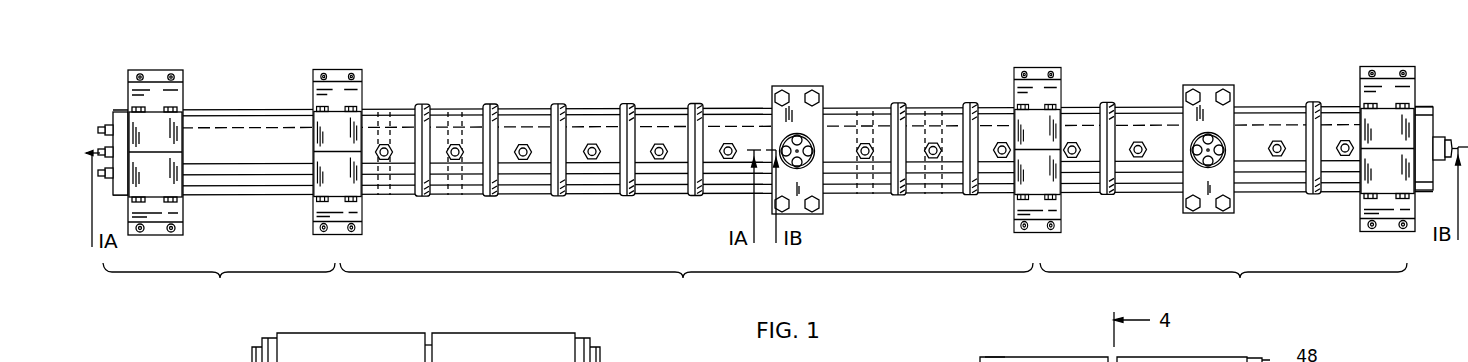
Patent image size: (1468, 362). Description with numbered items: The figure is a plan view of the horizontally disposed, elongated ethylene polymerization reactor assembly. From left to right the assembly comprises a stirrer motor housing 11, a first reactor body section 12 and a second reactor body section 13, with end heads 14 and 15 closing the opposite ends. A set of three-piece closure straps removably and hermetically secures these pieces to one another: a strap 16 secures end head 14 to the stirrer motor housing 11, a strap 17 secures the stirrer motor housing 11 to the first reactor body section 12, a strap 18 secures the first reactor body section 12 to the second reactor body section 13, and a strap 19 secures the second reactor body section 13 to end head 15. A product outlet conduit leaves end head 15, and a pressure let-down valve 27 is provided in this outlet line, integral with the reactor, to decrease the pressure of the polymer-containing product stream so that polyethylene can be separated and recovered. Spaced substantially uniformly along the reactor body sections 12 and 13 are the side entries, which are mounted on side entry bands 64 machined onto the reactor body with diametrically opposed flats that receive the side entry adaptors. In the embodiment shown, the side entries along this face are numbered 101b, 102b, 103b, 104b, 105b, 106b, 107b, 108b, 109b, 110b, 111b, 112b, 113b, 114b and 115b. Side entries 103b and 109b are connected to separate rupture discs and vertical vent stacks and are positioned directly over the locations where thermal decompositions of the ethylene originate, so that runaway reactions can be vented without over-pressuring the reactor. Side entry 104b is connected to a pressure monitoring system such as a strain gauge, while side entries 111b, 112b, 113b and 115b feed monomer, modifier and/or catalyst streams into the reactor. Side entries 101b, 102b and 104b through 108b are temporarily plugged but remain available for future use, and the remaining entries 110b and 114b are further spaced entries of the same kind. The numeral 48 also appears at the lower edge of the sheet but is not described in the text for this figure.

The stirrer motor housing 11 is at (212, 304).
The first reactor body section 12 is at (674, 304).
The second reactor body section 13 is at (1228, 301).
The end head 14 is at (113, 113).
The end head 15 is at (1425, 108).
The strap 16 is at (171, 66).
The strap 17 is at (339, 66).
The strap 18 is at (1063, 71).
The strap 19 is at (1419, 74).
The pressure let-down valve 27 is at (1440, 137).
The end clamp 48 is at (944, 361).
The side entry bands 64 is at (385, 198).
The side entry 101b is at (1346, 139).
The side entry 102b is at (1280, 139).
The side entry 103b is at (1229, 86).
The side entry 104b is at (1140, 141).
The side entry 105b is at (1073, 141).
The side entry 106b is at (999, 142).
The side entry 107b is at (936, 143).
The side entry 108b is at (868, 143).
The side entry 109b is at (810, 87).
The side entry 110b is at (731, 143).
The side entry 111b is at (662, 143).
The side entry 112b is at (595, 143).
The side entry 113b is at (527, 143).
The side entry 114b is at (458, 143).
The side entry 115b is at (388, 143).